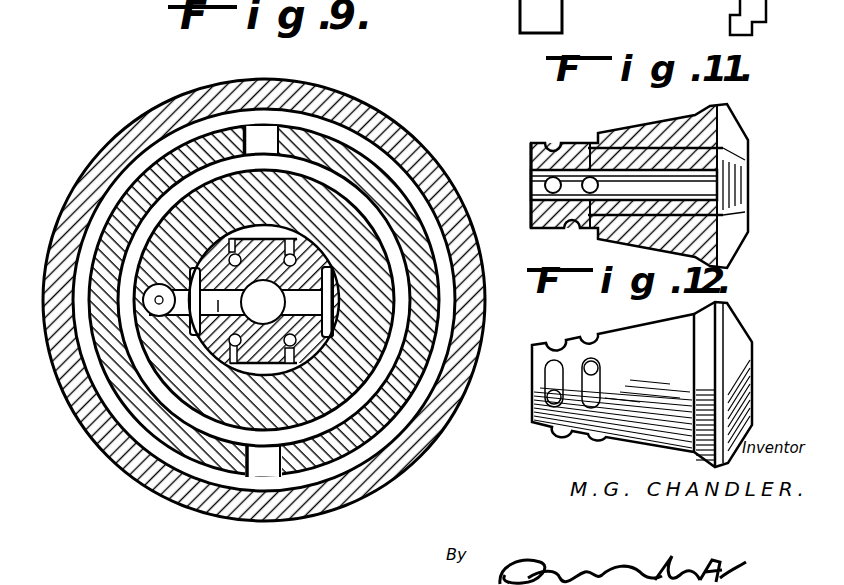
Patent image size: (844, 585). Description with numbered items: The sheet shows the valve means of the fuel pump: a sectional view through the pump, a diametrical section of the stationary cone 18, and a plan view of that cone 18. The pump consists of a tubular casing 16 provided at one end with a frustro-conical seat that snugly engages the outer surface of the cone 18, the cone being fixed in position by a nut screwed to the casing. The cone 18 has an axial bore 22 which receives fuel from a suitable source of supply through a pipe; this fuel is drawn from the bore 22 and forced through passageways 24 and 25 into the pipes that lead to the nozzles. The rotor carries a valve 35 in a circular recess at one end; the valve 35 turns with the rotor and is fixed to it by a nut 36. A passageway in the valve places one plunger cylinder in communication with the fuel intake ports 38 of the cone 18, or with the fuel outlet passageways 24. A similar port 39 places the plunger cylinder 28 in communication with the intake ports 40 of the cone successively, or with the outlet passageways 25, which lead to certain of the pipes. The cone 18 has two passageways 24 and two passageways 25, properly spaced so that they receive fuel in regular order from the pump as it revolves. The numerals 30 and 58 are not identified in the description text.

In FIG. 9, the tubular casing 16 is at (380, 186).
In FIG. 9, the cone 18 is at (265, 363).
In FIG. 11, the cone 18 is at (697, 118).
In FIG. 12, the cone 18 is at (642, 384).
In FIG. 9, the axial bore 22 is at (263, 302).
In FIG. 11, the axial bore 22 is at (690, 188).
In FIG. 9, the passageways 24 is at (301, 158).
In FIG. 11, the passageways 24 is at (580, 215).
In FIG. 12, the passageways 24 is at (532, 398).
In FIG. 9, the passageways 25 is at (345, 230).
In FIG. 11, the passageways 25 is at (618, 153).
In FIG. 12, the passageways 25 is at (600, 368).
In FIG. 9, the plunger cylinder 28 is at (95, 392).
In FIG. 9, the outer housing ring 30 is at (88, 222).
In FIG. 9, the valve 35 is at (390, 230).
In FIG. 9, the nut 36 is at (377, 187).
In FIG. 11, the fuel intake ports 38 is at (531, 187).
In FIG. 9, the port 39 is at (123, 413).
In FIG. 9, the intake ports 40 is at (110, 480).
In FIG. 11, the intake ports 40 is at (585, 180).
In FIG. 11, the adjacent figure fragment 58 is at (735, 20).